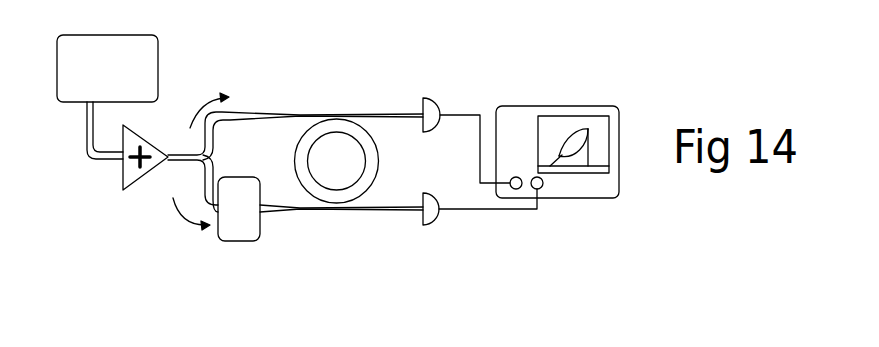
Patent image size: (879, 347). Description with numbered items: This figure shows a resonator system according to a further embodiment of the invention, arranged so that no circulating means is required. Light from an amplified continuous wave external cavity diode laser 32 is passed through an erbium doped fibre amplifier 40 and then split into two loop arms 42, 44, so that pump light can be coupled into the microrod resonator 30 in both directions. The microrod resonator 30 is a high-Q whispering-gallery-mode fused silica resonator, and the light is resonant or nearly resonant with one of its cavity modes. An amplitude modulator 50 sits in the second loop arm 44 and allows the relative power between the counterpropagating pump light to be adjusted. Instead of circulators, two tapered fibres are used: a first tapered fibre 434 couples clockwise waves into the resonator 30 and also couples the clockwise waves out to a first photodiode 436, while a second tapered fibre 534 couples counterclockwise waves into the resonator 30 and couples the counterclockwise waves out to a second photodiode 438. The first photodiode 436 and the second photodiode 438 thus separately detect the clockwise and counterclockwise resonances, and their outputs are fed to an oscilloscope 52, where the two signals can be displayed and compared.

The external cavity diode laser 32 is at (107, 57).
The erbium doped fibre amplifier 40 is at (125, 170).
The loop arm 42 is at (204, 142).
The loop arm 44 is at (204, 172).
The amplitude modulator 50 is at (238, 241).
The microrod resonator 30 is at (315, 128).
The first tapered fibre 434 is at (356, 141).
The first photodiode 436 is at (434, 114).
The second photodiode 438 is at (425, 221).
The second tapered fibre 534 is at (345, 208).
The oscilloscope 52 is at (558, 187).